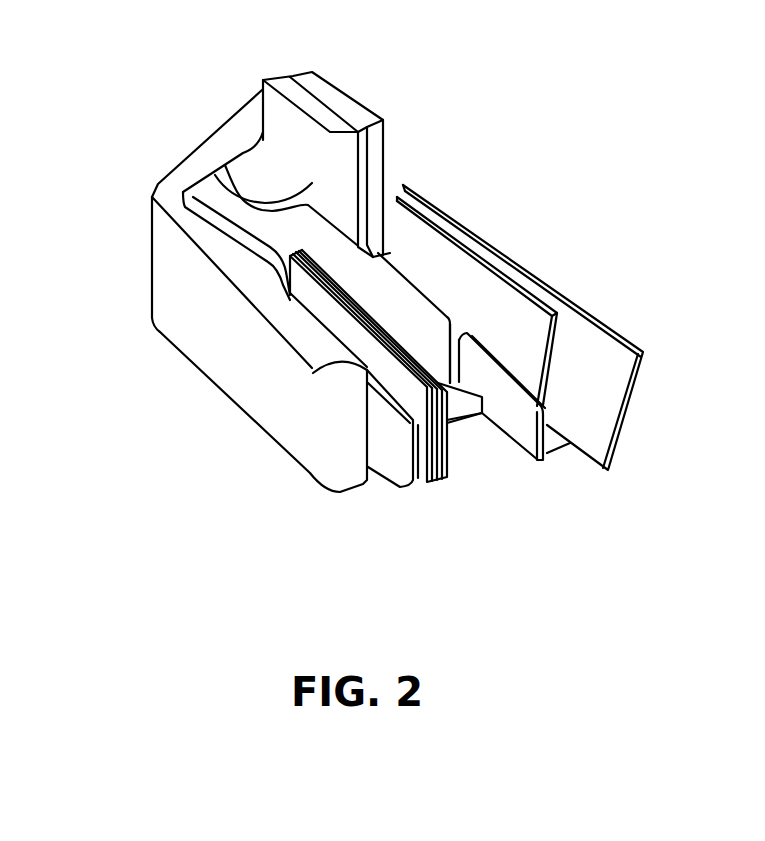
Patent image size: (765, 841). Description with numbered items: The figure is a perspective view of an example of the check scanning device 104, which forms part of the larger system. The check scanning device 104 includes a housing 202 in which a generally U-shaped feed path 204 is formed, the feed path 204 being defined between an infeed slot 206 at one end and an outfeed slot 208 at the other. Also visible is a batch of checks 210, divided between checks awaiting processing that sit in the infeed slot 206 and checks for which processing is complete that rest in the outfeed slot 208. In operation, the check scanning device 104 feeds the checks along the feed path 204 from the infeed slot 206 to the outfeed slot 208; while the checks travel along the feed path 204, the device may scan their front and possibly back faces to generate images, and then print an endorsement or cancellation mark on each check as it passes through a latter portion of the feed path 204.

The check scanning device 104 is at (523, 198).
The housing 202 is at (171, 283).
The feed path 204 is at (203, 183).
The infeed slot 206 is at (315, 372).
The outfeed slot 208 is at (367, 175).
The batch of checks 210 is at (440, 495).